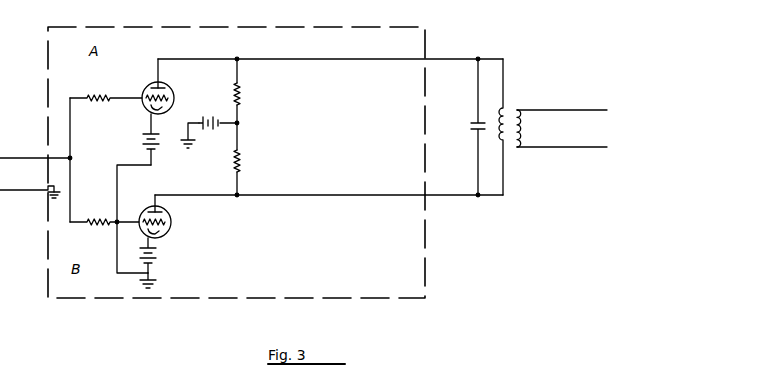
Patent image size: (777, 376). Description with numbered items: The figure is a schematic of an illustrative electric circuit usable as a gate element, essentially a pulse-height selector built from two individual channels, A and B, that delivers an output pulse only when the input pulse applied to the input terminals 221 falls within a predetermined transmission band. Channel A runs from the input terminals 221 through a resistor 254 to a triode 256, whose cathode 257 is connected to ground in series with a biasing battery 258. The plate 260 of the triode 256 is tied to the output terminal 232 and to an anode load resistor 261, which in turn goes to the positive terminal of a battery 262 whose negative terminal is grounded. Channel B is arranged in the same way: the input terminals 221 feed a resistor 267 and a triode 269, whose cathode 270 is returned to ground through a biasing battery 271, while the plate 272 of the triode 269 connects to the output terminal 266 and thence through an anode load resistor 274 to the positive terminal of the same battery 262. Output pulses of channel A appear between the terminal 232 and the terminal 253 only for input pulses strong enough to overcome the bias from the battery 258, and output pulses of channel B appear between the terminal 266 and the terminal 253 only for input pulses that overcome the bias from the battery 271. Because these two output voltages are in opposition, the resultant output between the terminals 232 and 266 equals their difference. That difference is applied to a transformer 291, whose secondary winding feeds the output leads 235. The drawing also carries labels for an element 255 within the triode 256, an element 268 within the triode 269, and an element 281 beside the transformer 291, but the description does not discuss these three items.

The input terminals 221 is at (31, 186).
The output terminal 232 is at (243, 55).
The output leads 235 is at (567, 112).
The terminal 253 is at (241, 124).
The resistor 254 is at (110, 94).
The filament 255 is at (147, 102).
The triode 256 is at (157, 72).
The cathode 257 is at (164, 108).
The biasing battery 258 is at (143, 148).
The plate 260 is at (166, 87).
The anode load resistor 261 is at (241, 94).
The battery 262 is at (198, 128).
The output terminal 266 is at (239, 198).
The resistor 267 is at (97, 225).
The filament 268 is at (171, 223).
The triode 269 is at (138, 219).
The cathode 270 is at (166, 235).
The biasing battery 271 is at (158, 260).
The plate 272 is at (168, 206).
The anode load resistor 274 is at (241, 159).
The capacitor 281 is at (471, 135).
The transformer 291 is at (508, 108).